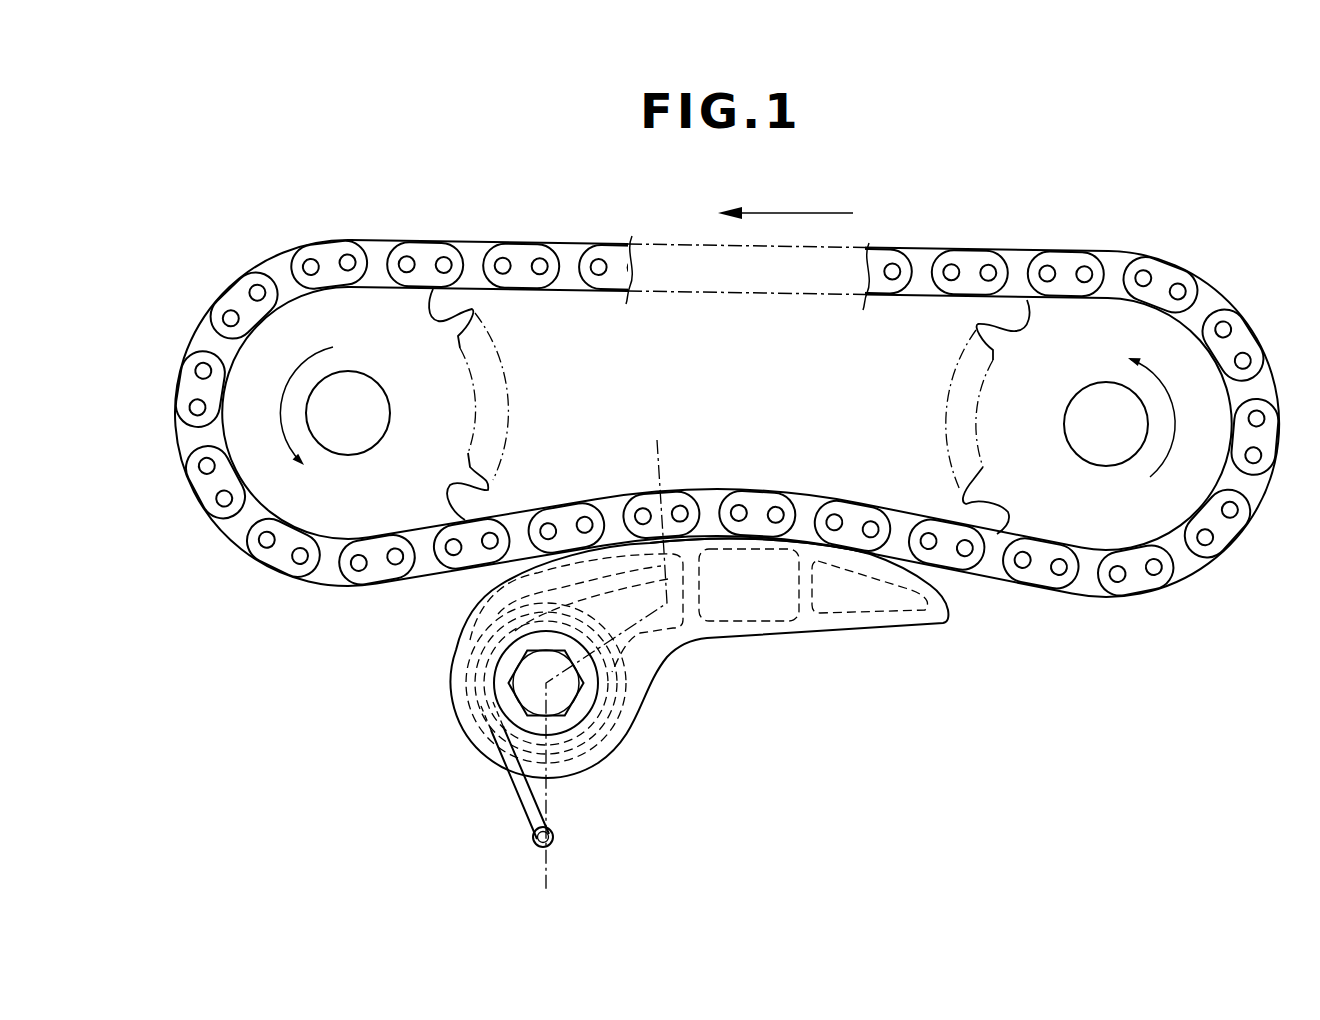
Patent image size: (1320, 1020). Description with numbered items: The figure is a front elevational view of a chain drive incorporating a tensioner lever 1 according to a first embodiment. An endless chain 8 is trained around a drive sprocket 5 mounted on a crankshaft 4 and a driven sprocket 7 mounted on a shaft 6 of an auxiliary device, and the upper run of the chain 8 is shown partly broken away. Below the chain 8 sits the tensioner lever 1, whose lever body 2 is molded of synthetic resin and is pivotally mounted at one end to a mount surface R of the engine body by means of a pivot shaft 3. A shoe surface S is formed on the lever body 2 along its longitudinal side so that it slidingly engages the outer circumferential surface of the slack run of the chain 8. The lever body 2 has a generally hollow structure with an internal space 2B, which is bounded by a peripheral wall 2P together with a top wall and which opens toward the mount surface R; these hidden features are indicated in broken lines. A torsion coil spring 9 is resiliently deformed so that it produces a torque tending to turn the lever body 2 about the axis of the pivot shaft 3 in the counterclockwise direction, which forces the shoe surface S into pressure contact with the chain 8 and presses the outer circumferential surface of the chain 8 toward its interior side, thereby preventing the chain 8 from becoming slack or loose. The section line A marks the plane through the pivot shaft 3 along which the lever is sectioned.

The tensioner lever 1 is at (654, 657).
The lever body 2 is at (700, 596).
The internal space 2B is at (632, 658).
The peripheral wall 2P is at (792, 630).
The pivot shaft 3 is at (526, 673).
The crankshaft 4 is at (370, 397).
The drive sprocket 5 is at (428, 468).
The shaft of an auxiliary device 6 is at (1077, 418).
The driven sprocket 7 is at (1027, 355).
The endless chain 8 is at (1013, 257).
The torsion coil spring 9 is at (503, 795).
The shoe surface S is at (747, 534).
The mount surface R is at (776, 700).
The section line A- A is at (550, 882).